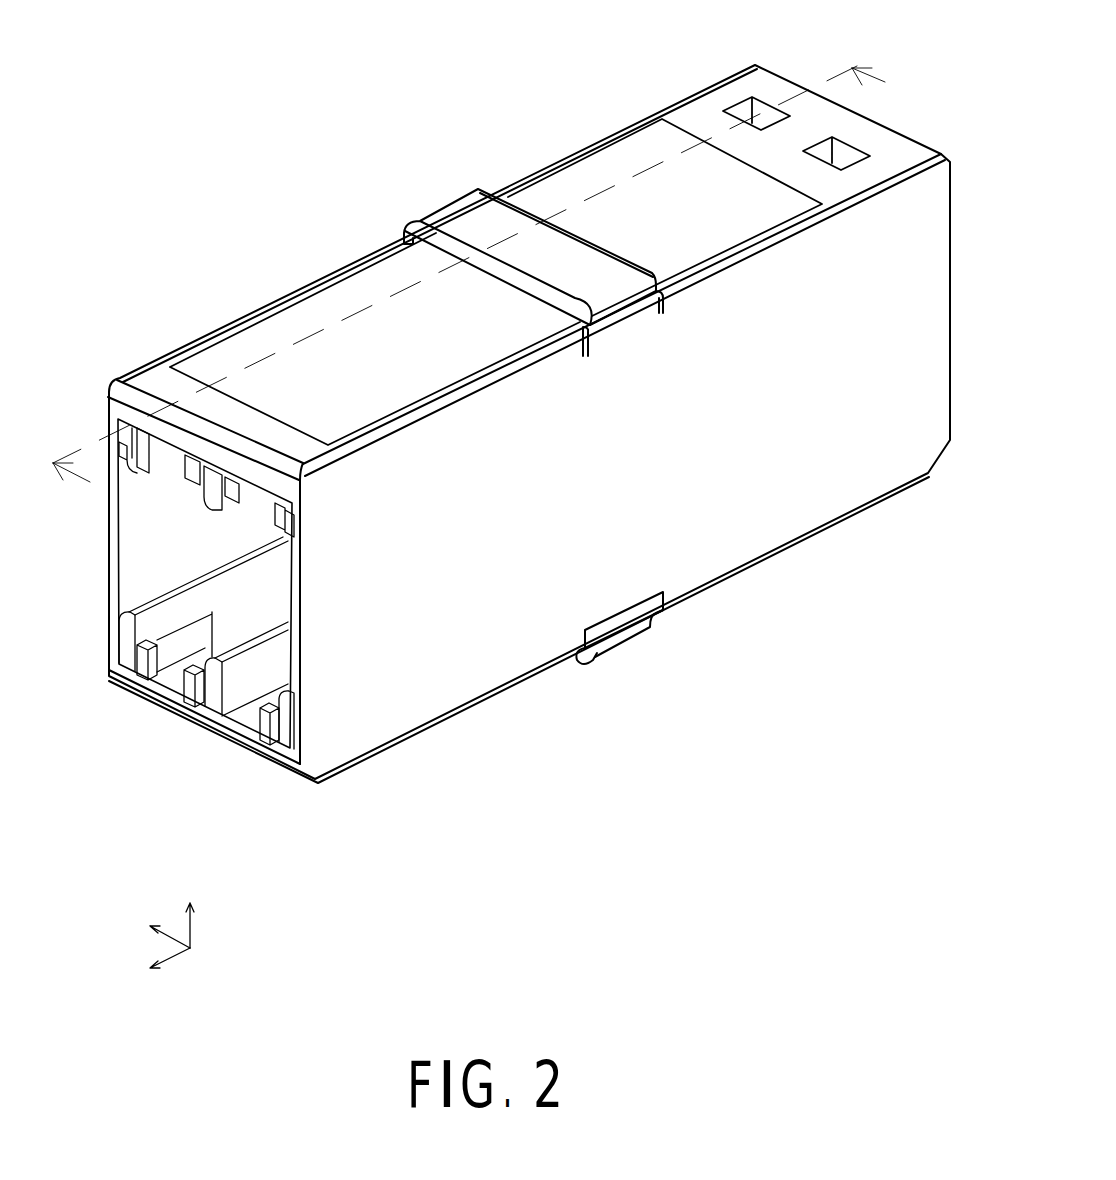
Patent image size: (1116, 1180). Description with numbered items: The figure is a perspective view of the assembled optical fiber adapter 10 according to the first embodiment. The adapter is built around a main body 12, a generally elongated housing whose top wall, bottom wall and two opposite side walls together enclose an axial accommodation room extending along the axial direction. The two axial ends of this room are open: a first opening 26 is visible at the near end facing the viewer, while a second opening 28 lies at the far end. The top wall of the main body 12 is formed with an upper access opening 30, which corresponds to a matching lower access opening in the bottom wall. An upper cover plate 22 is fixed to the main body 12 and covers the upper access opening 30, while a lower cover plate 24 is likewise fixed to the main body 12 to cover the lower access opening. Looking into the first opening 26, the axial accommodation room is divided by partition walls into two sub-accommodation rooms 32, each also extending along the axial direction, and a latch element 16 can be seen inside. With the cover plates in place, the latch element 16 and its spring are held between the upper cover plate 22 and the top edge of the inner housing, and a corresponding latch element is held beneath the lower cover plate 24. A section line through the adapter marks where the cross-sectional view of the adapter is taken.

The optical fiber adapter 10 is at (86, 42).
The main body 12 is at (787, 550).
The latch element 16 is at (185, 470).
The upper cover plate 22 is at (548, 168).
The lower cover plate 24 is at (623, 645).
The first opening 26 is at (230, 748).
The second opening 28 is at (910, 127).
The upper access opening 30 is at (183, 378).
The sub-accommodation room 32 is at (150, 547).